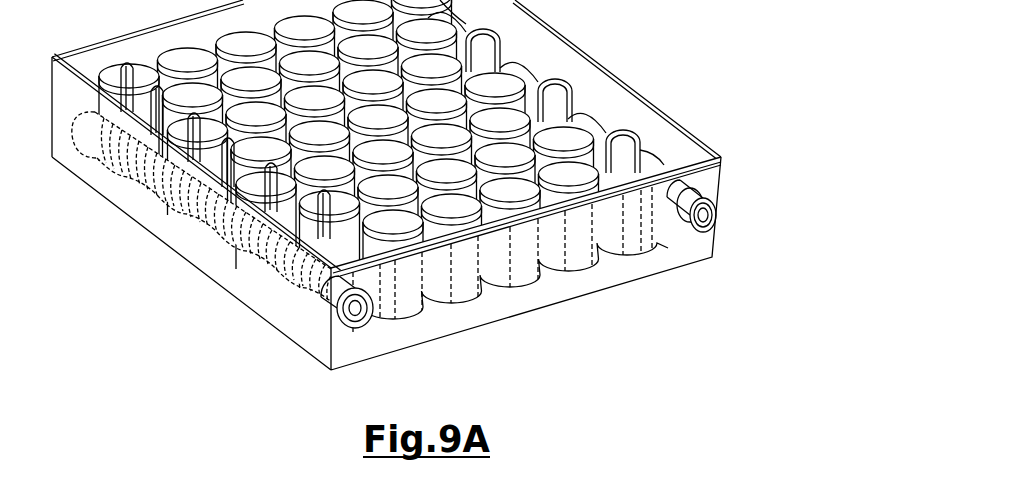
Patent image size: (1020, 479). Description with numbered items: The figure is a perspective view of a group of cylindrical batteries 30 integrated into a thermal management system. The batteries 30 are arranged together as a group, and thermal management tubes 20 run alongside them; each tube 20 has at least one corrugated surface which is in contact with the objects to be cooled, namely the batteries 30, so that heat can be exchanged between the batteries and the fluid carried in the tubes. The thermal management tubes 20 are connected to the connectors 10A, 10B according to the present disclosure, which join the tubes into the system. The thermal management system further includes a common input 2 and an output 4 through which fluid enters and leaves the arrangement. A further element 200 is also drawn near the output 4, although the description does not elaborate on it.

The common input 2 is at (333, 323).
The output 4 is at (718, 216).
The connector 10A is at (439, 153).
The connector 10B is at (670, 162).
The thermal management tube 20 is at (557, 218).
The cylindrical battery 30 is at (563, 130).
The port connector 200 is at (690, 180).